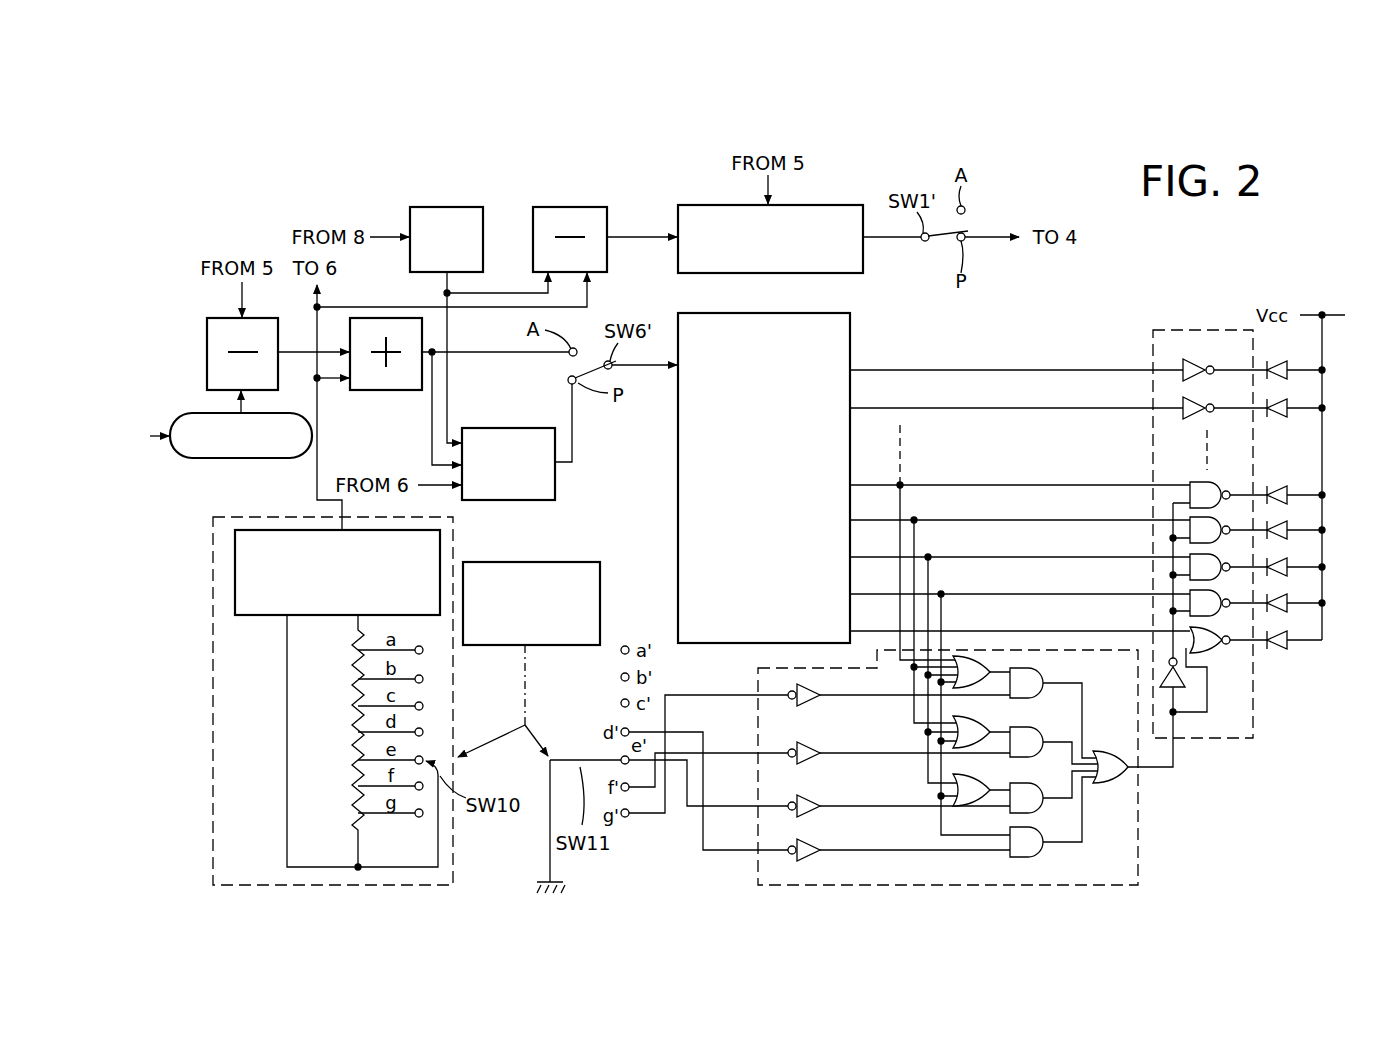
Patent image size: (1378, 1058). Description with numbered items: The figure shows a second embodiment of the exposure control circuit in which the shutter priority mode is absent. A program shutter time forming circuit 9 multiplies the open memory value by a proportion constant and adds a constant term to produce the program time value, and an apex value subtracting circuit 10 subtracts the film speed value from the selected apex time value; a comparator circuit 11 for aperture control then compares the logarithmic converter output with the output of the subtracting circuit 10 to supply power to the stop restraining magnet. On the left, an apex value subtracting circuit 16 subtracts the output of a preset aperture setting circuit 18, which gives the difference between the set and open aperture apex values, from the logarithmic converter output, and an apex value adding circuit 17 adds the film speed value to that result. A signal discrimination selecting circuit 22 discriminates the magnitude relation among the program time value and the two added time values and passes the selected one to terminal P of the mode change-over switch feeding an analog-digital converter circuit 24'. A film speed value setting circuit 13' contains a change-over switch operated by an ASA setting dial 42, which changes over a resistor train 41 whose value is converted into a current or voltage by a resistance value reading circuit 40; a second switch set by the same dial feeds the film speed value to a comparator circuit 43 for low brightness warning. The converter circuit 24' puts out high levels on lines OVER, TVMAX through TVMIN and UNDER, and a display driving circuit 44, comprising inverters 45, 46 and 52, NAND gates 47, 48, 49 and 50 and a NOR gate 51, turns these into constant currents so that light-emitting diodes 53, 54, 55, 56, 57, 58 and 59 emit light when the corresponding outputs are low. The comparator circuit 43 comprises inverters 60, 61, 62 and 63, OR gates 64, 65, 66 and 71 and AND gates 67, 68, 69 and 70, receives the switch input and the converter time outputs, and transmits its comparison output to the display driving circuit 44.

The program shutter time forming circuit 9 is at (447, 207).
The apex value subtracting circuit 10 is at (565, 207).
The comparator circuit for aperture control 11 is at (863, 253).
The film speed value setting circuit 13' is at (369, 701).
The apex value subtracting circuit 16 is at (207, 345).
The apex value adding circuit 17 is at (386, 390).
The preset aperture setting circuit 18 is at (237, 458).
The signal discrimination selecting circuit 22 is at (512, 500).
The analog-digital converter circuit 24' is at (733, 478).
The resistance value reading circuit 40 is at (230, 574).
The resistor train 41 is at (356, 733).
The ASA setting dial 42 is at (578, 562).
The comparator circuit 43 is at (1140, 838).
The display driving circuit 44 is at (1215, 740).
The inverter 45 is at (1198, 360).
The inverter 46 is at (1190, 418).
The NAND gate 47 is at (1222, 480).
The NAND gate 48 is at (1173, 538).
The NAND gate 49 is at (1173, 575).
The NAND gate 50 is at (1173, 611).
The NOR gate 51 is at (1212, 655).
The inverter 52 is at (1180, 684).
The light-emitting diode 53 is at (1288, 364).
The light-emitting diode 54 is at (1288, 414).
The light-emitting diode 55 is at (1278, 486).
The light-emitting diode 56 is at (1288, 524).
The light-emitting diode 57 is at (1288, 561).
The light-emitting diode 58 is at (1288, 598).
The light-emitting diode 59 is at (1277, 652).
The inverter 60 is at (815, 700).
The inverter 61 is at (815, 758).
The inverter 62 is at (815, 812).
The inverter 63 is at (815, 856).
The OR gate 64 is at (967, 648).
The OR gate 65 is at (968, 718).
The OR gate 66 is at (952, 778).
The AND gate 67 is at (1045, 675).
The AND gate 68 is at (1045, 732).
The AND gate 69 is at (1045, 792).
The AND gate 70 is at (1045, 853).
The OR gate 71 is at (1105, 787).